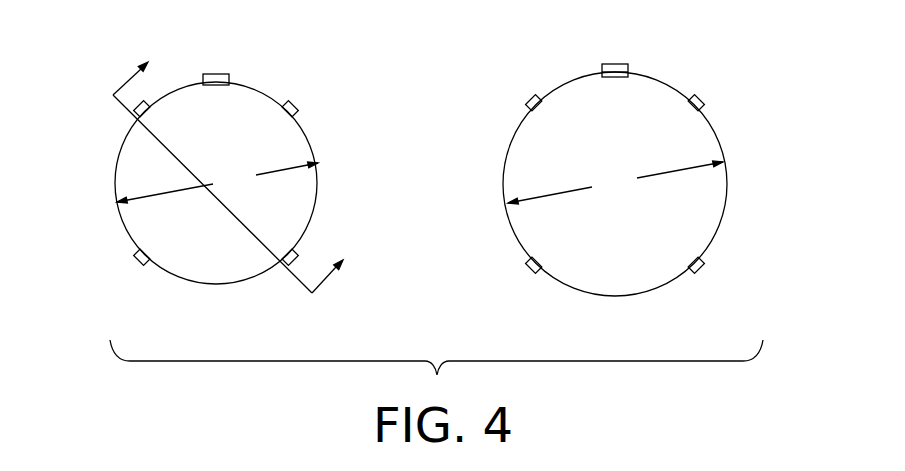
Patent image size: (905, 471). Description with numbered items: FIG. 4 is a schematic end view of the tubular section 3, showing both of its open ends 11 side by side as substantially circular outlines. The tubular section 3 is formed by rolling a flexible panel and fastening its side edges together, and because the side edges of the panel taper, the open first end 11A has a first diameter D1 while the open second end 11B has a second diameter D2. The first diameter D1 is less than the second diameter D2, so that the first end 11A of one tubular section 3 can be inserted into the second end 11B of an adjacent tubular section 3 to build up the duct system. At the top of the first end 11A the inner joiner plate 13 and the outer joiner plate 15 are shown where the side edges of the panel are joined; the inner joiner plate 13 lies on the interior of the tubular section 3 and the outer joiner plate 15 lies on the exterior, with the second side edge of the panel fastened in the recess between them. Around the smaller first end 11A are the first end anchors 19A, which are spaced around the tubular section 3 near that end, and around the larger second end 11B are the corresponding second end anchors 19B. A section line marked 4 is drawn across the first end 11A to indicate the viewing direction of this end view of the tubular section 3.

The tubular section 3 is at (452, 207).
The section line 4- 4 is at (235, 174).
The open ends 11 is at (622, 207).
The first end 11A is at (302, 121).
The second end 11B is at (605, 296).
The inner joiner plate 13 is at (222, 85).
The outer joiner plate 15 is at (222, 74).
The first end anchors 19A is at (298, 262).
The second end anchors 19B is at (703, 266).
The first diameter D1 is at (217, 182).
The second diameter D2 is at (615, 182).